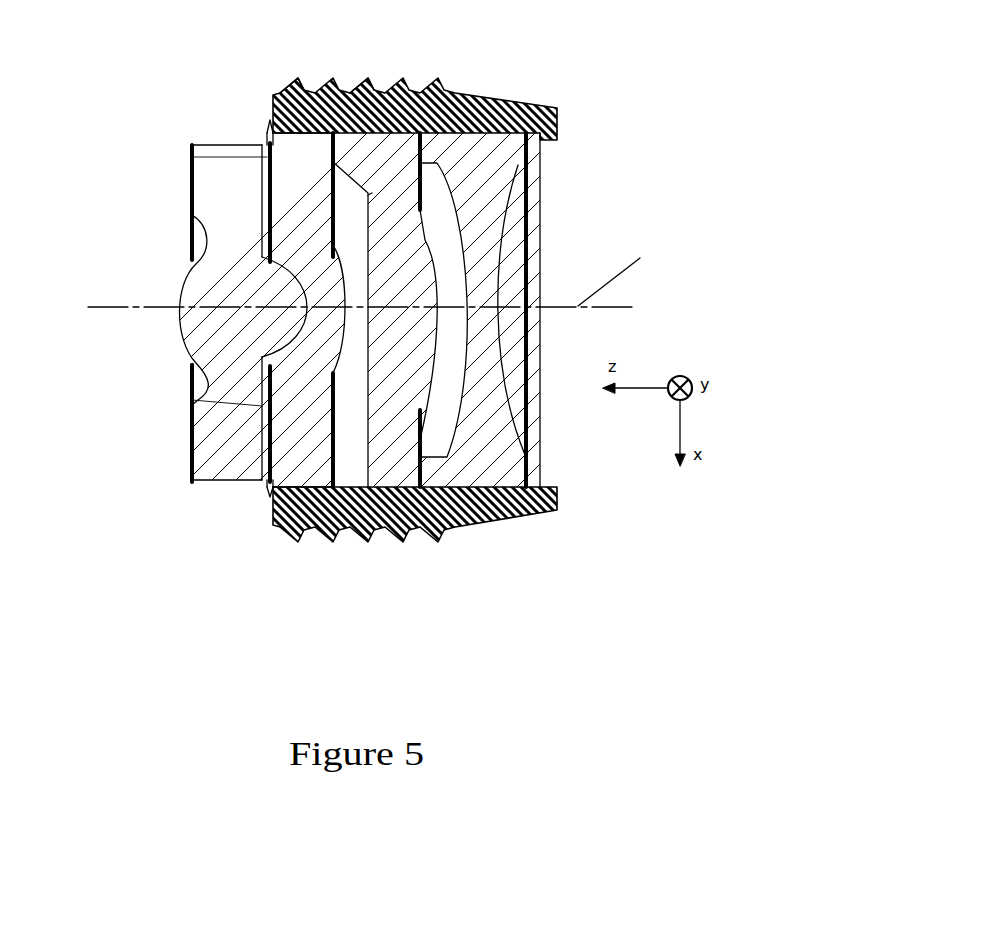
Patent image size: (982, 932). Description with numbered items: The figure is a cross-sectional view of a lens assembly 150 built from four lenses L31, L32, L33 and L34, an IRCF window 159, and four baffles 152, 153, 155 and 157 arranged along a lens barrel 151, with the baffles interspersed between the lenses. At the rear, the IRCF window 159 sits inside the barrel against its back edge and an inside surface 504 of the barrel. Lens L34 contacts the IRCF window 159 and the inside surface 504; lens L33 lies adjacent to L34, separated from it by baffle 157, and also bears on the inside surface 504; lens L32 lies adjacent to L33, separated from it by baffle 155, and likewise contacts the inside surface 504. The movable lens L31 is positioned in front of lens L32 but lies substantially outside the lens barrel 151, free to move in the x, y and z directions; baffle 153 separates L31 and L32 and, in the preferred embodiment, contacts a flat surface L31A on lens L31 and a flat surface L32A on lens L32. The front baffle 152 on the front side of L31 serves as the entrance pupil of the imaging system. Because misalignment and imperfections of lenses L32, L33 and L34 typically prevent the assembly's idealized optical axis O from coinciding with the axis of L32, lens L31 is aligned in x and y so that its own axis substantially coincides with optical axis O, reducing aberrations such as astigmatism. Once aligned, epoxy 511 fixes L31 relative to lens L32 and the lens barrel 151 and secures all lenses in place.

The lens assembly 150 is at (635, 109).
The lens barrel 151 is at (295, 82).
The front baffle 152 is at (190, 370).
The baffle 153 is at (192, 400).
The baffle 155 is at (368, 80).
The baffle 157 is at (448, 133).
The IRCF window 159 is at (542, 460).
The inside surface 504 is at (372, 193).
The epoxy 511 is at (262, 170).
The movable lens L31 is at (210, 433).
The flat surface L31A is at (192, 158).
The lens L32 is at (293, 470).
The flat surface L32A is at (272, 133).
The lens L33 is at (383, 467).
The lens L34 is at (475, 457).
The optical axis O is at (626, 265).